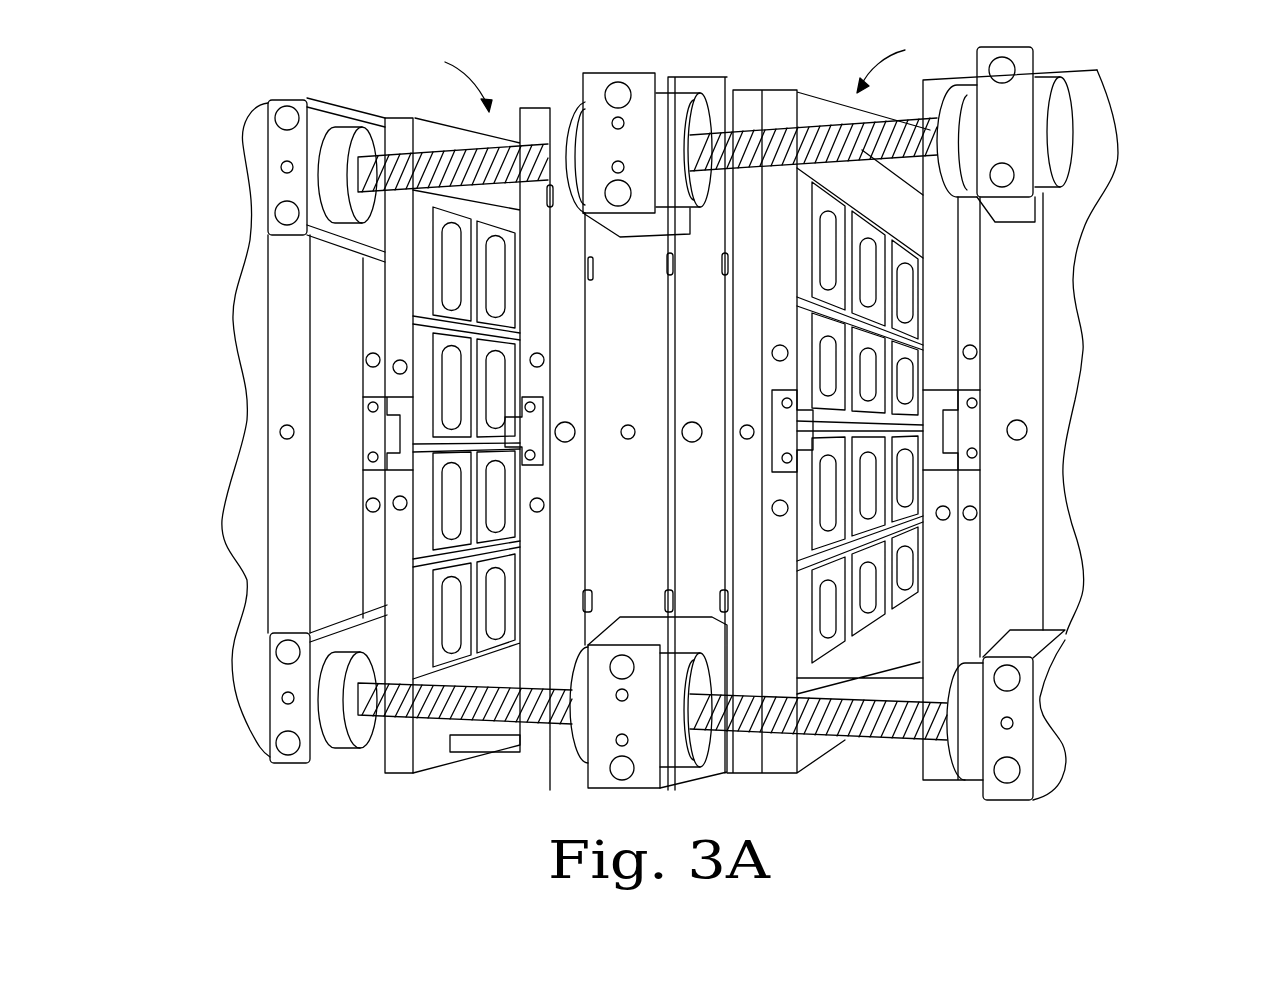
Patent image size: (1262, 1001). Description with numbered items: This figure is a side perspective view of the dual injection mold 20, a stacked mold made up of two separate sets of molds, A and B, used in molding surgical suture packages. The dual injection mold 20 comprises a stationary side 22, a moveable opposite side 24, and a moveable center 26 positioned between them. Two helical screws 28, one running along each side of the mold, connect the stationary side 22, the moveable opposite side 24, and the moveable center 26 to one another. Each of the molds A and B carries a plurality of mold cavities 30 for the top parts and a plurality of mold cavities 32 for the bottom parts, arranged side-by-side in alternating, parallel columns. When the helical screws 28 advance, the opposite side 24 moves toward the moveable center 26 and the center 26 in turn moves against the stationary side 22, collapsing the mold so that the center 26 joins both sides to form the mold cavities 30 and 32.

The dual injection mold 20 is at (1128, 83).
The stationary side 22 is at (287, 563).
The moveable opposite side 24 is at (1020, 518).
The moveable center 26 is at (623, 272).
The helical screws 28 is at (866, 728).
The mold cavities for top parts 30 is at (453, 637).
The mold cavities for bottom parts 32 is at (494, 630).